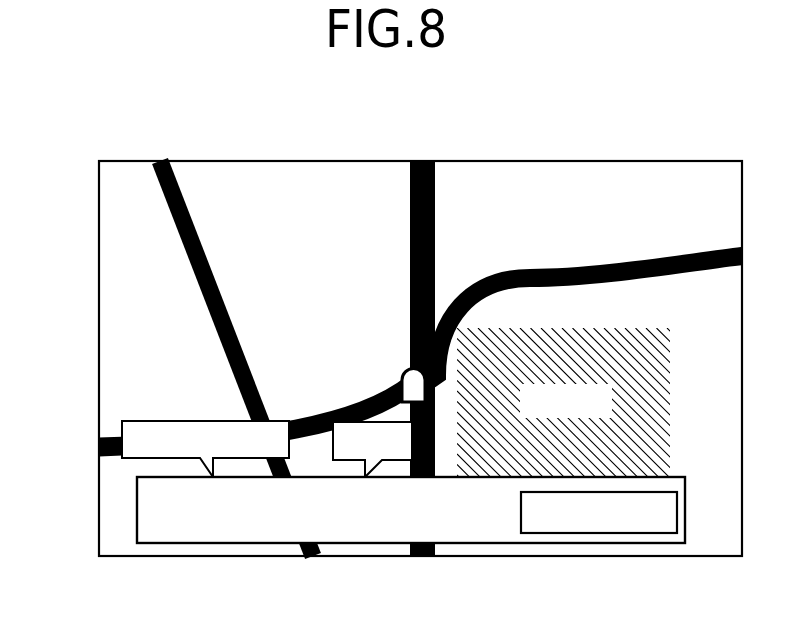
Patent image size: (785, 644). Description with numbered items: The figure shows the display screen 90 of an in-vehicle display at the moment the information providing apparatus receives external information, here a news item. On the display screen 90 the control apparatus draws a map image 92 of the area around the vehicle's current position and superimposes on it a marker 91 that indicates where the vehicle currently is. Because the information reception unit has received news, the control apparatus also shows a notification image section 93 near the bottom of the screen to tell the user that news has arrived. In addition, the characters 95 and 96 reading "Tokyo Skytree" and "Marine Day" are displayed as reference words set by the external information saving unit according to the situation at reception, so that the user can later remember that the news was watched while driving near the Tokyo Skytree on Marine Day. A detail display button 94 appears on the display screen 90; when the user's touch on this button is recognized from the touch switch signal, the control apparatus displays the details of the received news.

The display screen 90 is at (500, 161).
The marker 91 is at (413, 373).
The map image 92 is at (610, 210).
The notification image section 93 is at (458, 533).
The detail display button 94 is at (630, 533).
The characters 95 is at (145, 421).
The characters 96 is at (342, 427).